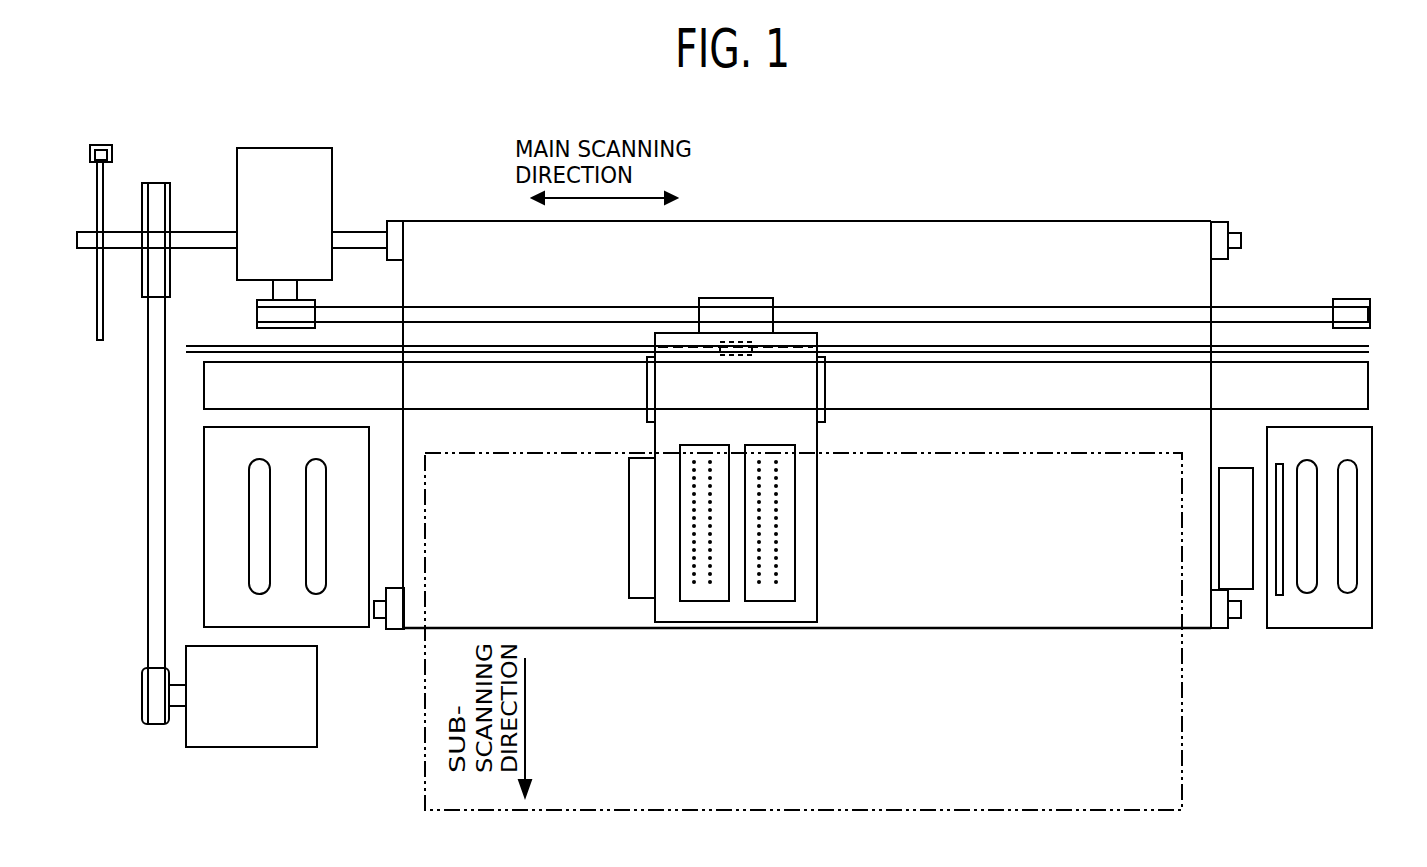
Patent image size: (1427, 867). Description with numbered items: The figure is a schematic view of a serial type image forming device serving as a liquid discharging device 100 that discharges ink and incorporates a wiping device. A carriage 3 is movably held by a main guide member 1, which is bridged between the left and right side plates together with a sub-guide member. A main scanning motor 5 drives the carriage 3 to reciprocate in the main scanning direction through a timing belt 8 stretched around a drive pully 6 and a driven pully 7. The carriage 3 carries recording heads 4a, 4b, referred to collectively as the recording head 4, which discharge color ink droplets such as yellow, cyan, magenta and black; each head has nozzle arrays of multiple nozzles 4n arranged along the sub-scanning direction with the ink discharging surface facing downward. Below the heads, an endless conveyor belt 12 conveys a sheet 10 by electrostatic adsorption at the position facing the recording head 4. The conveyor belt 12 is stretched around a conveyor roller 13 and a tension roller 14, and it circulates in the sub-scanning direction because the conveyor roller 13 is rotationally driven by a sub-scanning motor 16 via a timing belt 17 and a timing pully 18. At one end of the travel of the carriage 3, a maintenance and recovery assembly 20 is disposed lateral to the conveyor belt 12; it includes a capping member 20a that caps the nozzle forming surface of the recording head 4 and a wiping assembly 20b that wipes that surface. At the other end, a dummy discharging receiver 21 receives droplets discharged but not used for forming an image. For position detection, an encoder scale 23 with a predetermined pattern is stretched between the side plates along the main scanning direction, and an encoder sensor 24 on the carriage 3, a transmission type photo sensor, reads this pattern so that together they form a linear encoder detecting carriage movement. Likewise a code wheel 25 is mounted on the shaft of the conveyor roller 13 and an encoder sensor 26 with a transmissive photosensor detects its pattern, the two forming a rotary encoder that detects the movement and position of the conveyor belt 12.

The main guide member 1 is at (1370, 384).
The carriage 3 is at (807, 443).
The recording head 4 is at (717, 586).
The recording head 4a is at (703, 597).
The recording head 4b is at (770, 597).
The nozzles 4n is at (778, 680).
The main scanning motor 5 is at (260, 148).
The drive pully 6 is at (267, 300).
The driven pully 7 is at (1353, 298).
The timing belt 8 is at (505, 307).
The sheet 10 is at (1184, 780).
The conveyor belt 12 is at (1160, 228).
The conveyor roller 13 is at (1216, 228).
The tension roller 14 is at (1220, 628).
The sub-scanning motor 16 is at (283, 749).
The timing belt 17 is at (146, 440).
The timing pully 18 is at (165, 185).
The maintenance and recovery assembly 20 is at (1341, 551).
The capping member 20a is at (1307, 594).
The wiping assembly 20b is at (1279, 596).
The dummy discharging receiver 21 is at (339, 631).
The encoder scale 23 is at (1275, 345).
The encoder sensor 24 is at (735, 345).
The code wheel 25 is at (96, 312).
The encoder sensor 26 is at (104, 145).
The liquid discharging device 100 is at (1292, 140).